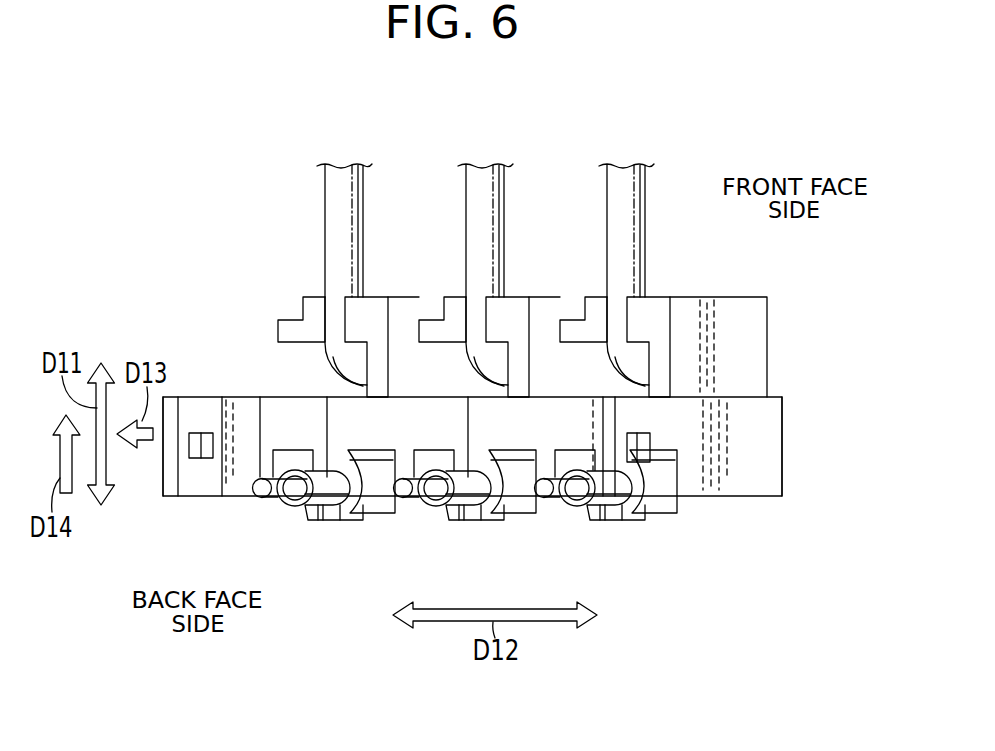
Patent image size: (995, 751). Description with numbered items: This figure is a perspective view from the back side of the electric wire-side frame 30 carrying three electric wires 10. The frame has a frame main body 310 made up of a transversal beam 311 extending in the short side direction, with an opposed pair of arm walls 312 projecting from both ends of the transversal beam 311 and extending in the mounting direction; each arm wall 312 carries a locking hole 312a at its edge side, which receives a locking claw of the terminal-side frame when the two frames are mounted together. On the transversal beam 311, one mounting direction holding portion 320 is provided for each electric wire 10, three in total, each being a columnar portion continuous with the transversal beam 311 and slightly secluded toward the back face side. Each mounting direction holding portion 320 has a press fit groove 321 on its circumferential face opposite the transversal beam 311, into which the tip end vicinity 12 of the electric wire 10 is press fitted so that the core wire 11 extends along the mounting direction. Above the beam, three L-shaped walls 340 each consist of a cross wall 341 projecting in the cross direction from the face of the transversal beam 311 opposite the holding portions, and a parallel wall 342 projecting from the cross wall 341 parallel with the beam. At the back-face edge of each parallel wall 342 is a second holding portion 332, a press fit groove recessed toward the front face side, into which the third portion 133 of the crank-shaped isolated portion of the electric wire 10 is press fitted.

The electric wire 10 is at (347, 165).
The third portion 133 is at (335, 323).
The second holding portion 332 is at (340, 317).
The cross wall 341 is at (395, 337).
The parallel wall 342 is at (297, 343).
The L-shaped wall 340 is at (158, 163).
The transversal beam 311 is at (572, 425).
The electric wire-side frame 30 is at (799, 404).
The frame main body 310 is at (782, 481).
The arm wall 312 is at (163, 497).
The locking hole 312a is at (205, 447).
The core wire 11 is at (280, 507).
The tip end vicinity 12 is at (335, 512).
The mounting direction holding portion 320 is at (375, 512).
The press fit groove 321 is at (321, 518).